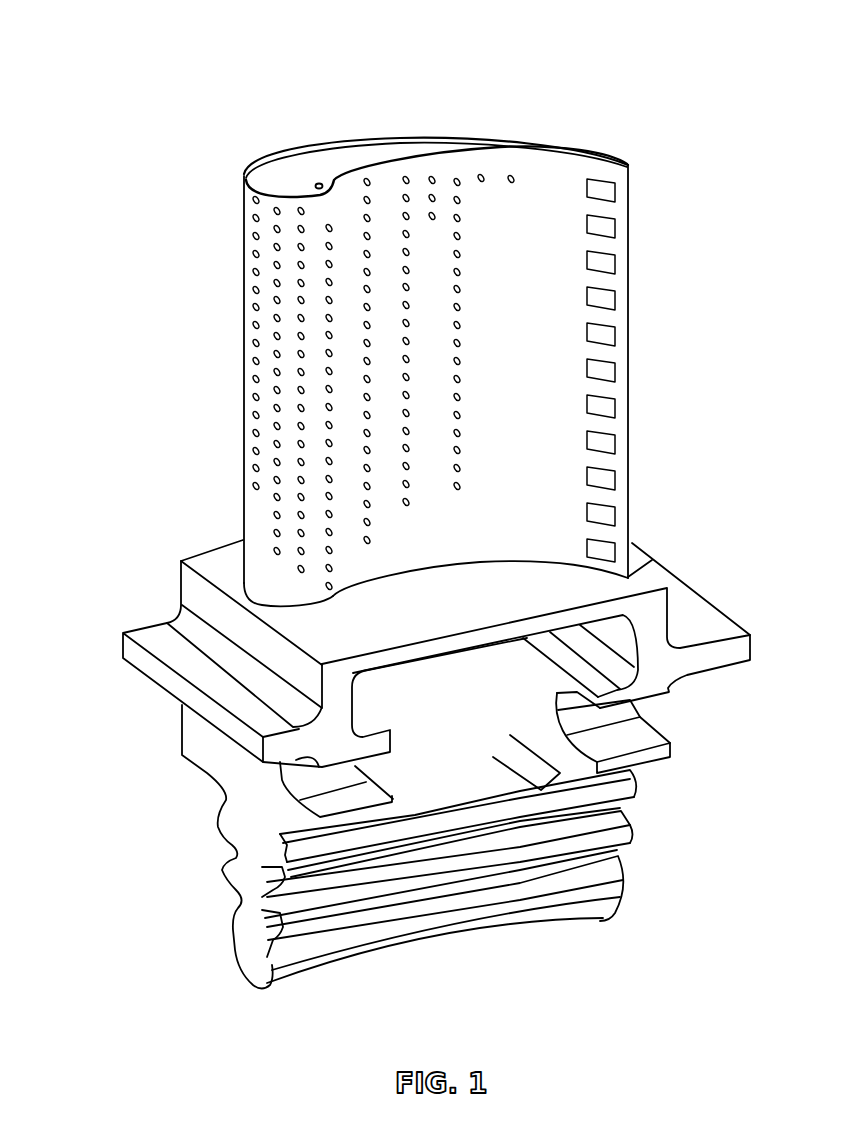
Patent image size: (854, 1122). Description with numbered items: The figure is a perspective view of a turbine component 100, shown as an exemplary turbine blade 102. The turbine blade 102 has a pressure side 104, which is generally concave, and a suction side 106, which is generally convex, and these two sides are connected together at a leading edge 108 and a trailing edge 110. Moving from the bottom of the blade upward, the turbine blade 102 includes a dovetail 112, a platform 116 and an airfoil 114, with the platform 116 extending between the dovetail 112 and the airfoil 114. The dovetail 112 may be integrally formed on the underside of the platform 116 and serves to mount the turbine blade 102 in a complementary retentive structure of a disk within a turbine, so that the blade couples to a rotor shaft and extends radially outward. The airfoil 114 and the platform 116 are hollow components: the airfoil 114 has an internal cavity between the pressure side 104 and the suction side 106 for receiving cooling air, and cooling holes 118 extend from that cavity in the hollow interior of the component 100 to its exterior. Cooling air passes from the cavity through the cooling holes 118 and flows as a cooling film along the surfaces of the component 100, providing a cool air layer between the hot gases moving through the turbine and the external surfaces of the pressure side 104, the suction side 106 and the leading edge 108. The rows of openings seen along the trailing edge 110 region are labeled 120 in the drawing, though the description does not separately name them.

The turbine component 100 is at (702, 971).
The turbine blade 102 is at (658, 94).
The pressure side 104 is at (473, 513).
The suction side 106 is at (385, 138).
The leading edge 108 is at (265, 215).
The trailing edge 110 is at (628, 242).
The dovetail 112 is at (253, 820).
The airfoil 114 is at (243, 389).
The platform 116 is at (163, 676).
The cooling holes 118 is at (367, 503).
The trailing edge cooling slots 120 is at (615, 478).